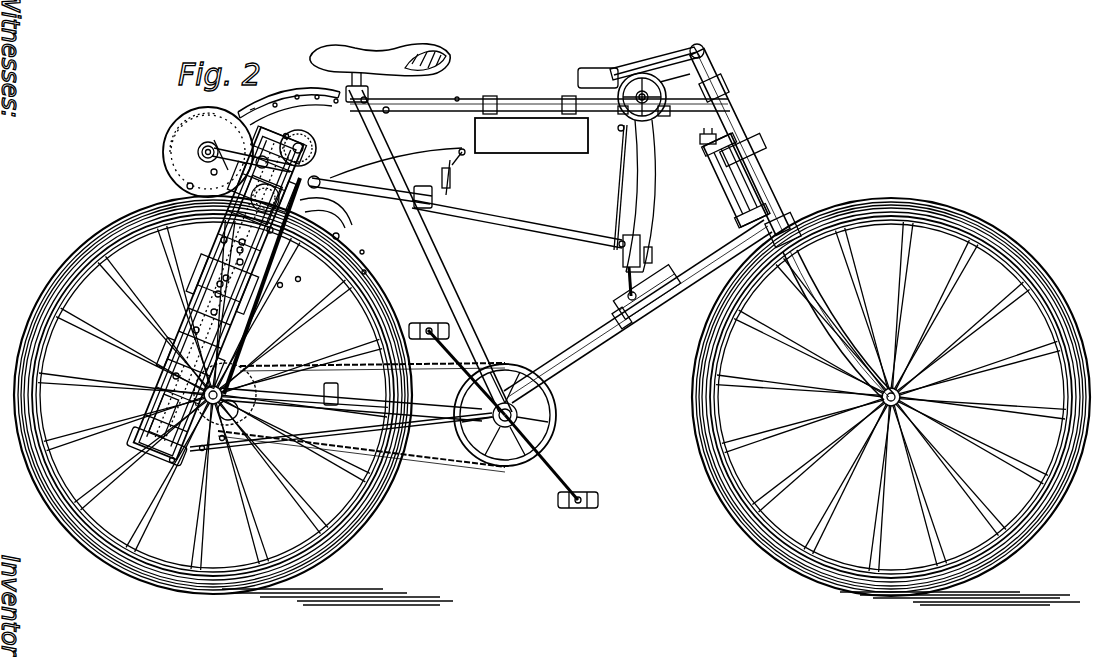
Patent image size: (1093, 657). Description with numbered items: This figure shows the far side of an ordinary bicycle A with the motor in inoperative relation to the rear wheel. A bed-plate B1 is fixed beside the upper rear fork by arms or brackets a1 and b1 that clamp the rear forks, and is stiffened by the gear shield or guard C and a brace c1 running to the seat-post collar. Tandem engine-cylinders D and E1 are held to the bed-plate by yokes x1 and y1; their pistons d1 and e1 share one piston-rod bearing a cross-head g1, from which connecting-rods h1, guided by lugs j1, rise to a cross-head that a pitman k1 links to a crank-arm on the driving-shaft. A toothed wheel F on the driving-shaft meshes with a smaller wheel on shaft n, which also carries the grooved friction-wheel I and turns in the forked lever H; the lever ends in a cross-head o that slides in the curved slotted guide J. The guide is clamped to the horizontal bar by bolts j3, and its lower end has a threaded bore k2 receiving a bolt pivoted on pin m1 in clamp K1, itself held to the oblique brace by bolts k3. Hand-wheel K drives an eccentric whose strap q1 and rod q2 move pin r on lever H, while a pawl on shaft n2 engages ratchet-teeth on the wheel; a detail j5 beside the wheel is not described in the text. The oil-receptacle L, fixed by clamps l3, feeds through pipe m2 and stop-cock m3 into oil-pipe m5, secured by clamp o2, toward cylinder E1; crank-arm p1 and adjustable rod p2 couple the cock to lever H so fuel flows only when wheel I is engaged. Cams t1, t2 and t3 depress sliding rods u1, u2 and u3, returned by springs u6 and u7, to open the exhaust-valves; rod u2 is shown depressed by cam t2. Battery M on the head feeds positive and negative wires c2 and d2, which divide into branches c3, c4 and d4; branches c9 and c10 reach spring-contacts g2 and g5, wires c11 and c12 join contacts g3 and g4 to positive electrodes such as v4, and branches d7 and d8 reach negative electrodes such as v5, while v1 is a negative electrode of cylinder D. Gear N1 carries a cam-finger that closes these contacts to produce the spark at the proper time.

The bicycle A is at (496, 232).
The bed-plate B1 is at (178, 396).
The forked lever H is at (517, 227).
The curved and slotted guide J is at (650, 198).
The hand-wheel K is at (666, 94).
The clamp K1 is at (652, 310).
The oil-receptacle L is at (531, 135).
The electric battery M is at (724, 198).
The grooved wheel I is at (192, 122).
The engine-cylinder D is at (217, 295).
The engine-cylinder E1 is at (164, 415).
The gear N1 is at (289, 156).
The gear shield or guard C is at (248, 108).
The toothed wheel F is at (340, 236).
The shaft n is at (200, 153).
The short shaft n2 is at (639, 74).
The cam t1 is at (236, 168).
The cam t2 is at (626, 280).
The cam t3 is at (230, 146).
The pitman k1 is at (188, 188).
The internally threaded bore k2 is at (650, 256).
The bolts k3 is at (624, 326).
The cross-head g1 is at (192, 330).
The spring-contact g2 is at (284, 135).
The spring-contact g3 is at (262, 158).
The spring-contact g4 is at (330, 177).
The spring-contact g5 is at (371, 177).
The bracket or brace c1 is at (335, 100).
The main positive wire c2 is at (456, 98).
The branch wire c3 is at (274, 104).
The branch wire c4 is at (316, 96).
The branch wire c9 is at (296, 96).
The branch wire c10 is at (366, 99).
The wire c11 is at (215, 284).
The wire c12 is at (374, 264).
The clamps l3 is at (492, 98).
The lug j1 is at (664, 116).
The bolts j3 is at (620, 110).
The joint j5 is at (660, 80).
The piston d1 is at (236, 262).
The main negative wire d2 is at (700, 142).
The branch wire d4 is at (388, 112).
The branch wire d7 is at (371, 243).
The branch wire d8 is at (300, 280).
The pin m1 is at (628, 296).
The short pipe m2 is at (467, 154).
The stop-cock m3 is at (462, 150).
The oil-pipe m5 is at (396, 154).
The crank-arm p1 is at (452, 166).
The adjustable rod p2 is at (444, 172).
The eccentric-strap q1 is at (618, 130).
The rod q2 is at (619, 170).
The pin r is at (618, 244).
The cross-head o is at (624, 258).
The clamp o2 is at (295, 360).
The sliding rod u1 is at (265, 220).
The sliding rod u2 is at (238, 240).
The sliding rod u3 is at (350, 208).
The returning-spring u6 is at (222, 278).
The returning-spring u7 is at (238, 408).
The negative electrode v1 is at (200, 450).
The positive electrode v4 is at (220, 240).
The negative electrode v5 is at (282, 286).
The yoke x1 is at (215, 294).
The yoke y1 is at (236, 250).
The connecting-rod h1 is at (210, 312).
The piston e1 is at (172, 376).
The arm or bracket a1 is at (230, 392).
The arm or bracket b1 is at (250, 433).